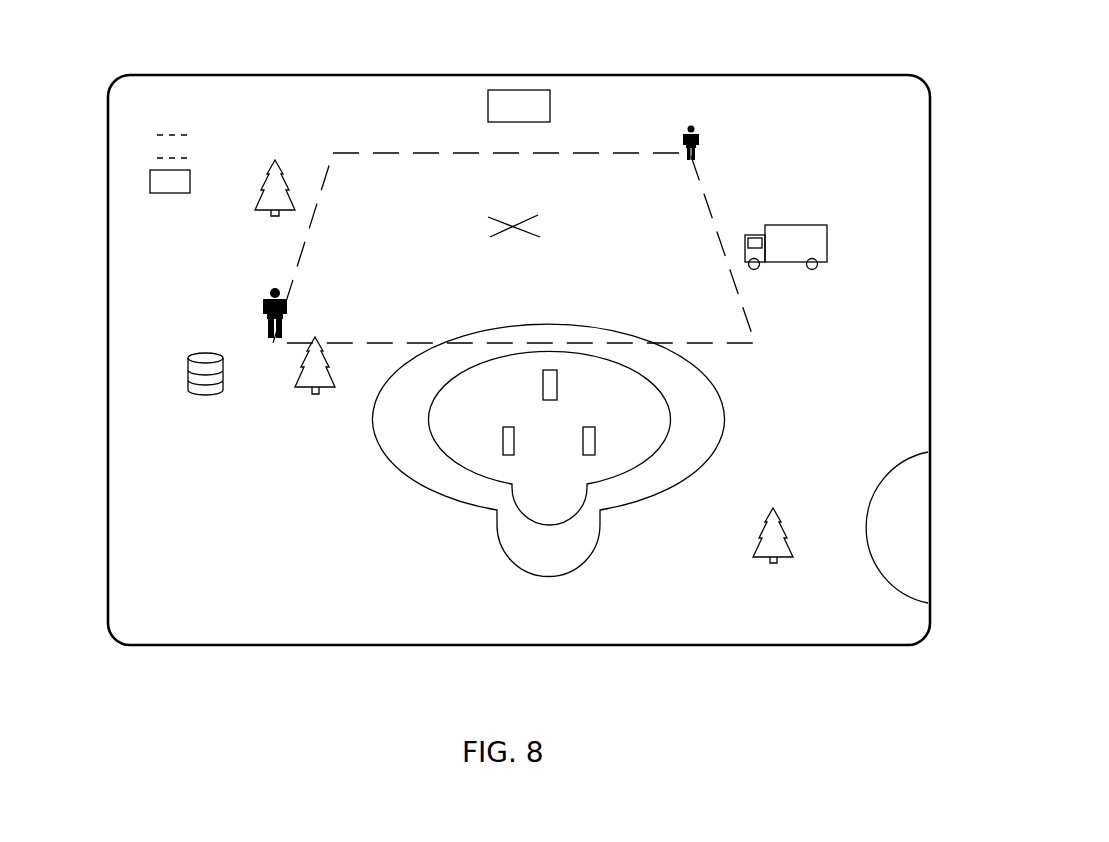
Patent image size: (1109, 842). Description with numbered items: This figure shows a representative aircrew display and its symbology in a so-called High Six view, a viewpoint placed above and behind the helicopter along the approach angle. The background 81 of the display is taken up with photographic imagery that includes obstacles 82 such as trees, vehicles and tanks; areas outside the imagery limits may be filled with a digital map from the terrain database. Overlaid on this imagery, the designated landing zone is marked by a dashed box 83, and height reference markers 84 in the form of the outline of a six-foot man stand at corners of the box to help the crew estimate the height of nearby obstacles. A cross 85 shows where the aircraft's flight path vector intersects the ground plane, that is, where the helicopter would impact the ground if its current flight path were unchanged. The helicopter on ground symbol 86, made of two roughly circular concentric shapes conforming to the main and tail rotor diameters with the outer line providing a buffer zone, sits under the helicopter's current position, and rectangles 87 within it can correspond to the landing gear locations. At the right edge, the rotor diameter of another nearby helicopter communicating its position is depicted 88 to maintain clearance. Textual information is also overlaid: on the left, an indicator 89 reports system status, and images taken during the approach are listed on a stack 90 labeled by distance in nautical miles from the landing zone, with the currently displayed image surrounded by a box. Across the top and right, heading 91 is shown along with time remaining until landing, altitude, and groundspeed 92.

The background 81 is at (519, 360).
The obstacles 82 is at (298, 393).
The dashed box 83 is at (752, 345).
The height reference markers 84 is at (260, 305).
The cross 85 is at (483, 231).
The helicopter on ground symbol 86 is at (465, 512).
The rectangles 87 is at (502, 438).
The rotor diameter depiction 88 is at (878, 562).
The indicator 89 is at (195, 92).
The stack 90 is at (150, 172).
The heading 91 is at (487, 100).
The time remaining, altitude, and groundspeed 92 is at (852, 100).